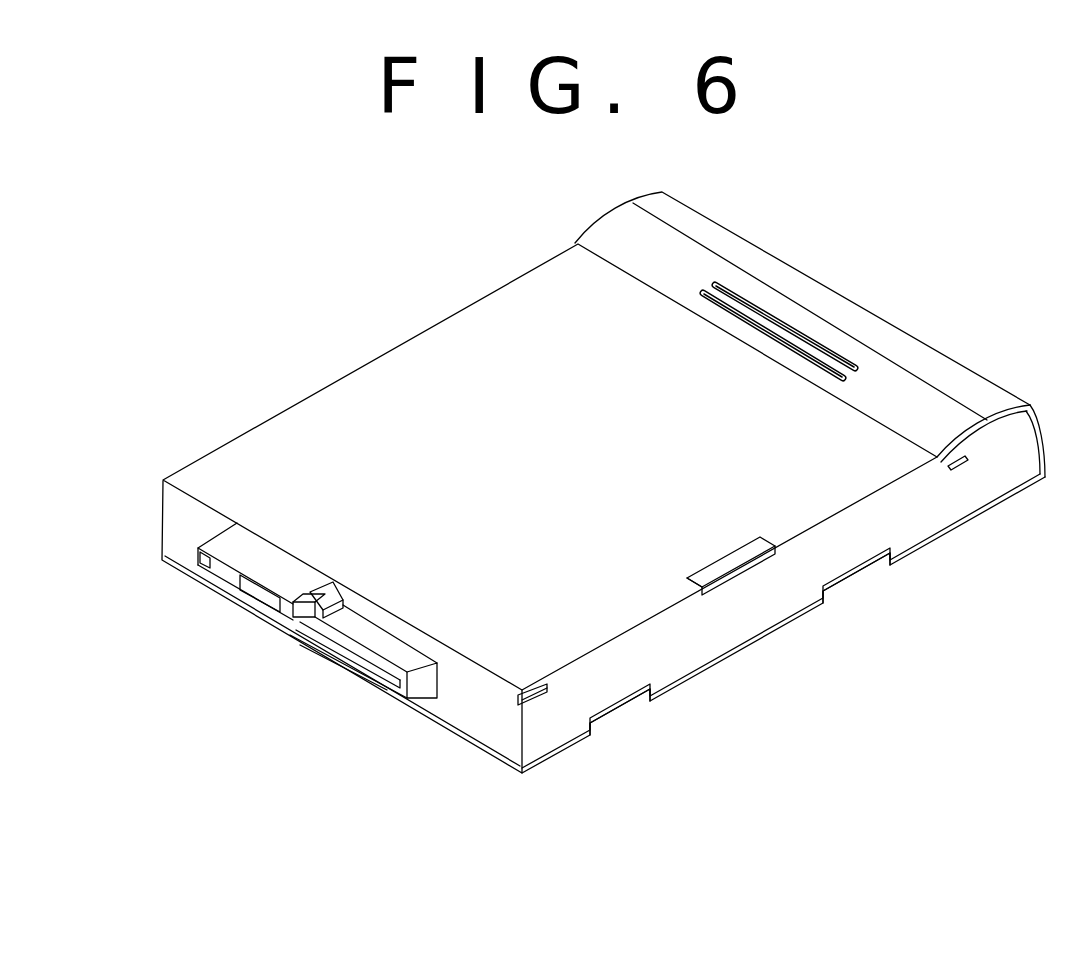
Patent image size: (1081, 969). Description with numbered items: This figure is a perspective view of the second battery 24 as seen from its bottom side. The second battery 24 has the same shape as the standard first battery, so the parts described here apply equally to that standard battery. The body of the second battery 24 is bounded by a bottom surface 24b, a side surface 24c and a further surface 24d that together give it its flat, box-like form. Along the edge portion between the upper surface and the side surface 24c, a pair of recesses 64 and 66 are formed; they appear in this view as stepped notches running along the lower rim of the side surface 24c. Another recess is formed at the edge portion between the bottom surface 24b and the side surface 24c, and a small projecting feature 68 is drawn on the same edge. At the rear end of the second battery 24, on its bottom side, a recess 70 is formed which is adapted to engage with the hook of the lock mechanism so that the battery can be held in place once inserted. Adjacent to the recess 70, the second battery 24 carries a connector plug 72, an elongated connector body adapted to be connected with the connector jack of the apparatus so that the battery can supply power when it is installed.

The second battery 24 is at (603, 482).
The bottom surface 24b is at (360, 400).
The side surface 24c is at (745, 620).
The front surface of casing 24d is at (463, 710).
The recess 64 is at (858, 572).
The recess 66 is at (620, 708).
The projection on top surface 68 is at (725, 568).
The recess 70 is at (327, 598).
The connector plug 72 is at (348, 652).